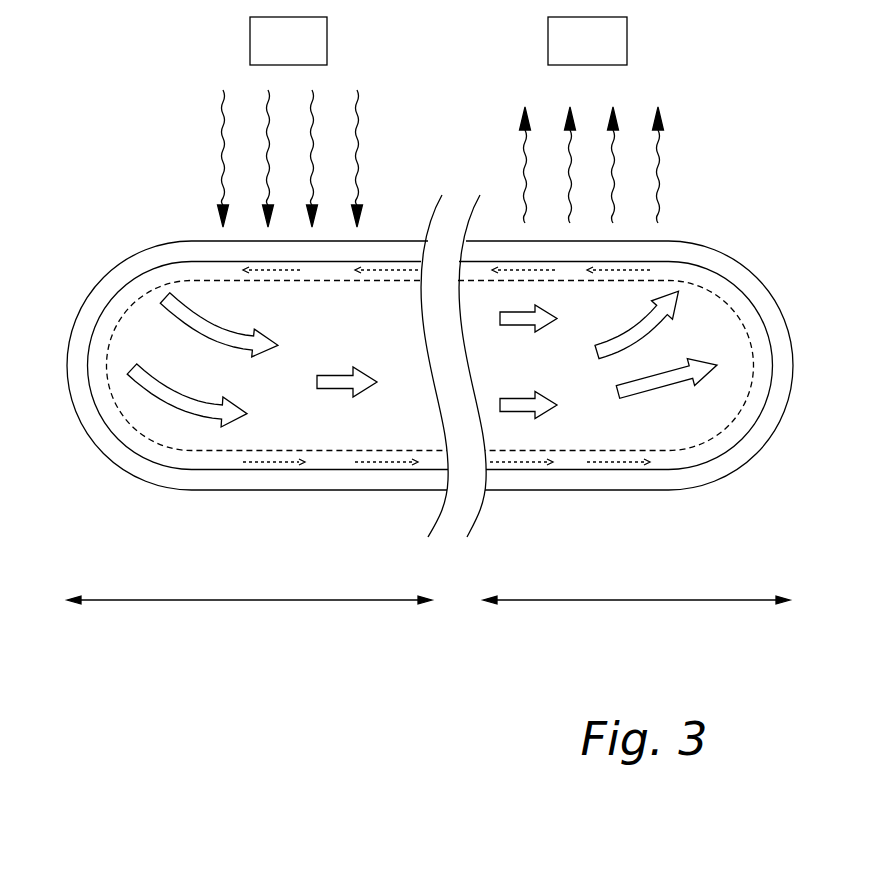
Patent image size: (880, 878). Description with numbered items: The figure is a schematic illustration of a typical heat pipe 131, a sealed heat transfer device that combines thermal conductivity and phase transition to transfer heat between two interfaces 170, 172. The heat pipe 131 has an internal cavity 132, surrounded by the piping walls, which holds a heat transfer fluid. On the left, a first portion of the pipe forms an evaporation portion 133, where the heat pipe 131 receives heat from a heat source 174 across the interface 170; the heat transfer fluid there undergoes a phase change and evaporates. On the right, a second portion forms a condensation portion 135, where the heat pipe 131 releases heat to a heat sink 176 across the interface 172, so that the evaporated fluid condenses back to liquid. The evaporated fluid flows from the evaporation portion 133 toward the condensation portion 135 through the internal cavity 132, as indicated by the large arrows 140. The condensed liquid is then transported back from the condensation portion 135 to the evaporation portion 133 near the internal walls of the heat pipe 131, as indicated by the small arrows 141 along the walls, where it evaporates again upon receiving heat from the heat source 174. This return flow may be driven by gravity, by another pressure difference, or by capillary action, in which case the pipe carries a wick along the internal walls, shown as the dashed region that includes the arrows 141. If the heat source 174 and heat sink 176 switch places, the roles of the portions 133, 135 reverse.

The heat pipe 131 is at (132, 172).
The internal cavity 132 is at (127, 408).
The evaporation portion 133 is at (249, 618).
The condensation portion 135 is at (636, 617).
The arrows 140 is at (185, 332).
The arrows 141 is at (630, 270).
The interface 170 is at (383, 229).
The interface 172 is at (507, 228).
The heat source 174 is at (288, 41).
The heat sink 176 is at (587, 41).